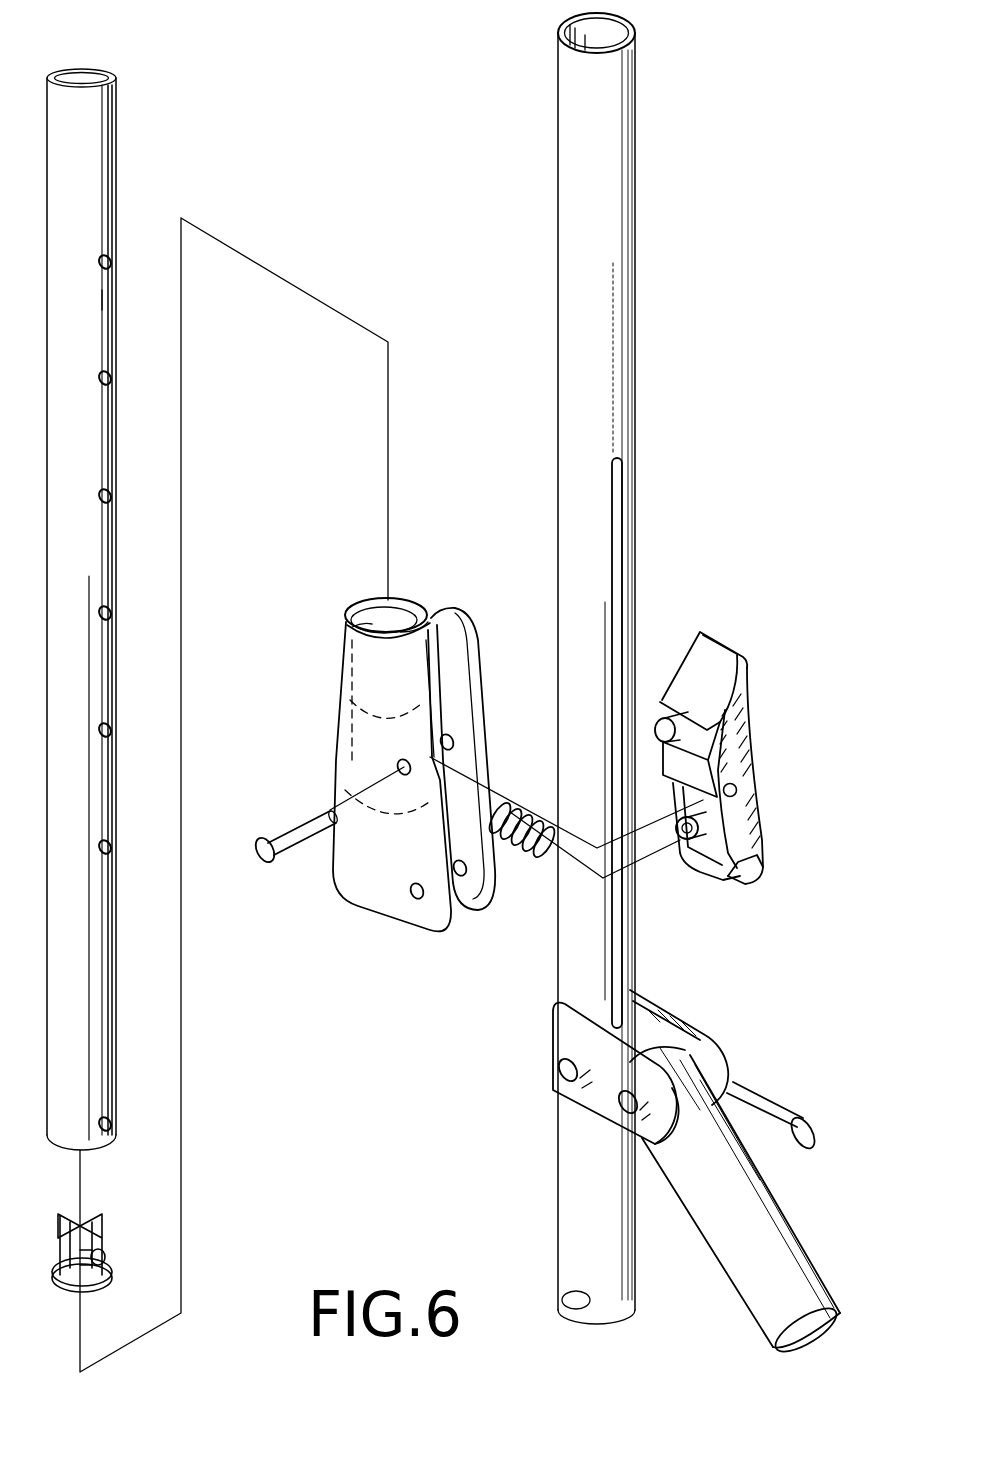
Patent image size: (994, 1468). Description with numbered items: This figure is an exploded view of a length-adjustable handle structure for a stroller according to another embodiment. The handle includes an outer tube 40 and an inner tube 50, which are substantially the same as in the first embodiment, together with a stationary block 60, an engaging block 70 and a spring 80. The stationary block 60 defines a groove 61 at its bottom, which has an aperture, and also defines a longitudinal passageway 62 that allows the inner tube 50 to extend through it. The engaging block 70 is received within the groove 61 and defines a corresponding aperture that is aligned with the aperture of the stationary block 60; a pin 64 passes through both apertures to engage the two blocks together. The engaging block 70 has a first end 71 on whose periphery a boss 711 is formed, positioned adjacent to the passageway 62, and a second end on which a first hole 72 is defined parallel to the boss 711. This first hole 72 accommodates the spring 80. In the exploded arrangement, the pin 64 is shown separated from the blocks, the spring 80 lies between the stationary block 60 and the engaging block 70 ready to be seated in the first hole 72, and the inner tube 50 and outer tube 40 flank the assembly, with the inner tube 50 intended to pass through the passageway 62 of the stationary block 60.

The outer tube 40 is at (622, 230).
The inner tube 50 is at (98, 192).
The stationary block 60 is at (348, 764).
The groove 61 is at (442, 632).
The longitudinal passageway 62 is at (395, 767).
The pin 64 is at (258, 838).
The engaging block 70 is at (737, 770).
The first end 71 is at (728, 636).
The boss 711 is at (657, 718).
The first hole 72 is at (712, 855).
The spring 80 is at (530, 862).